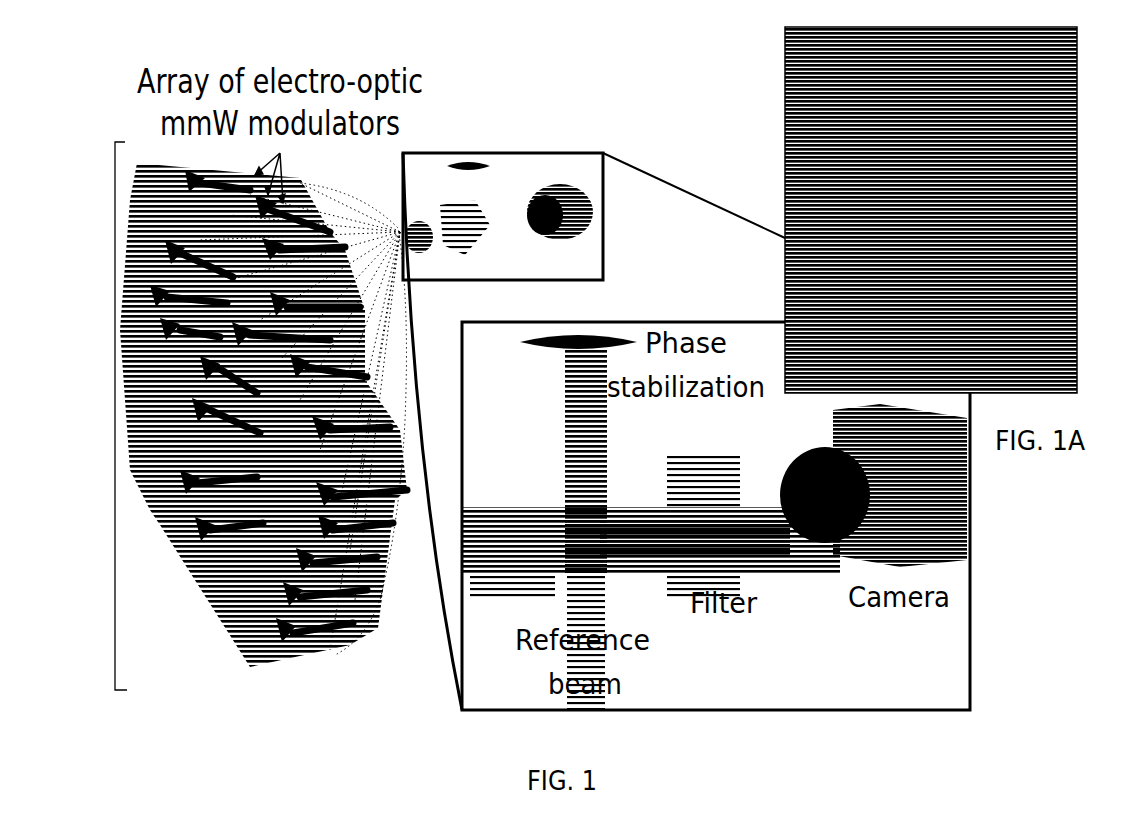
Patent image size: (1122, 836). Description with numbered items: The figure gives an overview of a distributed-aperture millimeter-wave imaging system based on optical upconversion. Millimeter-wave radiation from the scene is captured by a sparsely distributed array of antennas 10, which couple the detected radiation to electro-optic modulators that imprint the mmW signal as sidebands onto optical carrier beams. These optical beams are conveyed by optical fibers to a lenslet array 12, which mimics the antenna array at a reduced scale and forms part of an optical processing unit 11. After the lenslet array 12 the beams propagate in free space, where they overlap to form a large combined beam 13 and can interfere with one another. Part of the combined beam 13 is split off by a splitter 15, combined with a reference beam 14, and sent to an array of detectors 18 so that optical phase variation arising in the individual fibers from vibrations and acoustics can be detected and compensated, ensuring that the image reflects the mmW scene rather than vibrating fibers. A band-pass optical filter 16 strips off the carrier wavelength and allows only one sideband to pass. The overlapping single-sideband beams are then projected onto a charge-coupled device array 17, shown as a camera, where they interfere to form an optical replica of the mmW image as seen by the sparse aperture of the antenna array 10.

The array of antennas 10 is at (113, 413).
The optical processing unit 11 is at (518, 153).
The lenslet array 12 is at (412, 222).
The combined beam 13 is at (490, 572).
The reference beam 14 is at (613, 612).
The splitter 15 is at (645, 588).
The band-pass optical filter 16 is at (717, 560).
The charge-coupled device (CCD) array 17 is at (972, 535).
The array of detectors 18 is at (543, 345).